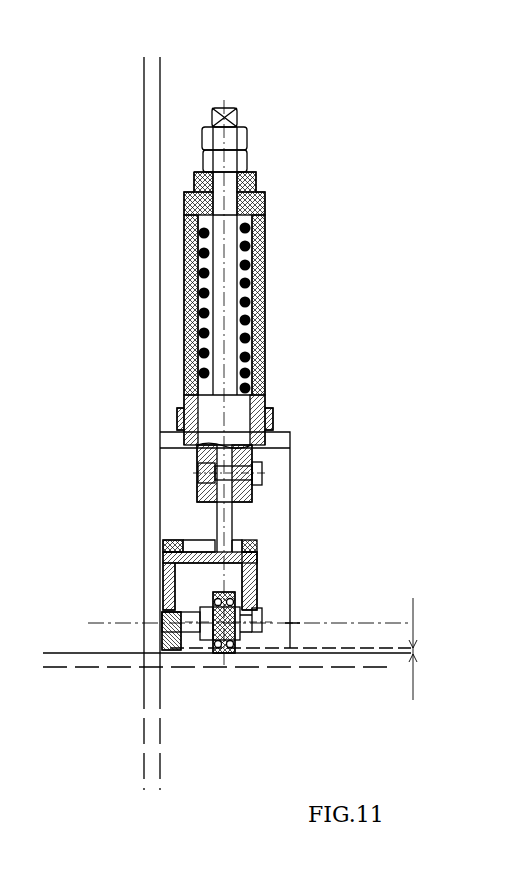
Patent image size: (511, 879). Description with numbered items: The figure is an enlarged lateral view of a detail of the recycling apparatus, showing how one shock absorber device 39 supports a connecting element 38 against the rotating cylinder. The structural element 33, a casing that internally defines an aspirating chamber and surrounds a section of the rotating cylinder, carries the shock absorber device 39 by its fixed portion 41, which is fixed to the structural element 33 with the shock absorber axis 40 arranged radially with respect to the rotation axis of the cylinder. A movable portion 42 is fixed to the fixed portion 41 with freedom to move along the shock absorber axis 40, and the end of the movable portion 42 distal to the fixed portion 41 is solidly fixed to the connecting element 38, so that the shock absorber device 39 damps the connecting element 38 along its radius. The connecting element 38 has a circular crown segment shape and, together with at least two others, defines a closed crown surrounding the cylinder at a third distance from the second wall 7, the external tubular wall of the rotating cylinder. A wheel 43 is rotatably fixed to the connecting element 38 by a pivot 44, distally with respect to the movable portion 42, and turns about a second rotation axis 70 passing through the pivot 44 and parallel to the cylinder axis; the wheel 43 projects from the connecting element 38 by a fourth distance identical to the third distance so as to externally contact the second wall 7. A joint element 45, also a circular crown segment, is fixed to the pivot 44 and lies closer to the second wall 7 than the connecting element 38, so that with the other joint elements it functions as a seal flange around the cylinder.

The second wall 7 is at (62, 653).
The structural element 33 is at (162, 110).
The connecting element 38 is at (253, 583).
The shock absorber device 39 is at (305, 302).
The shock absorber axis 40 is at (225, 228).
The fixed portion 41 is at (263, 237).
The movable portion 42 is at (232, 525).
The wheel 43 is at (227, 650).
The pivot 44 is at (160, 607).
The joint element 45 is at (164, 553).
The second rotation axis 70 is at (117, 623).